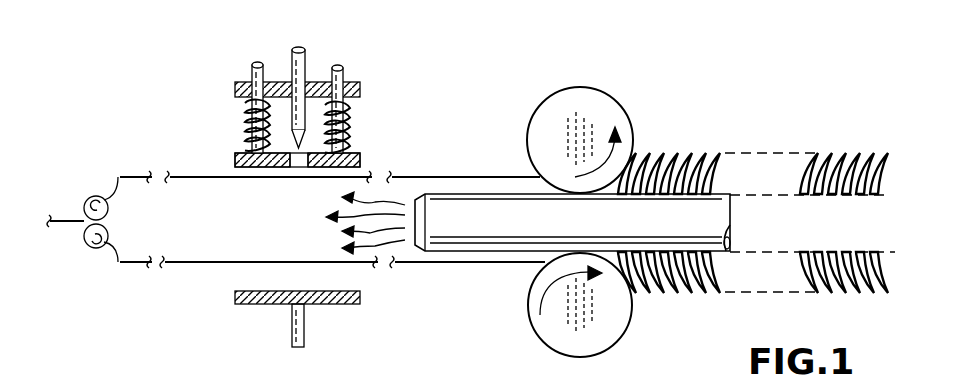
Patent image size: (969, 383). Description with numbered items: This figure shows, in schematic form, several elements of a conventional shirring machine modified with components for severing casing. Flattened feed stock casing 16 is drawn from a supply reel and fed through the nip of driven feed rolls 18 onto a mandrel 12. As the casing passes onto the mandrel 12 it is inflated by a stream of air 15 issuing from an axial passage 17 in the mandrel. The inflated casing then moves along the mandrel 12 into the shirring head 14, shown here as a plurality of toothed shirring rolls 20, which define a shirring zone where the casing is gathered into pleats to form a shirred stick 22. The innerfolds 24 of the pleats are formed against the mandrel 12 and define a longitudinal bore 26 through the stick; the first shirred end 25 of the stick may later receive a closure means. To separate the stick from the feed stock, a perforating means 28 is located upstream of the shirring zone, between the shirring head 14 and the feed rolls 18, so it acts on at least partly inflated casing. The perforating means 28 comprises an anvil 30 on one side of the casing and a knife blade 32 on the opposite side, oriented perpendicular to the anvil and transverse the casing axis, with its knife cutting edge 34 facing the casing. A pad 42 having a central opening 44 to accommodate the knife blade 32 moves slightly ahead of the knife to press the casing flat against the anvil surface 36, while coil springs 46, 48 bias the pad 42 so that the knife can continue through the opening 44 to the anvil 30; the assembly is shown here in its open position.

The mandrel 12 is at (722, 255).
The shirring head 14 is at (598, 72).
The stream of air 15 is at (350, 223).
The feed stock casing 16 is at (103, 196).
The axial passage 17 is at (732, 240).
The feed rolls 18 is at (90, 249).
The toothed shirring rolls 20 is at (616, 104).
The shirred stick 22 is at (705, 160).
The innerfolds 24 is at (690, 202).
The first shirred end 25 is at (888, 188).
The longitudinal bore 26 is at (832, 200).
The perforating means 28 is at (232, 42).
The anvil 30 is at (294, 310).
The knife blade 32 is at (308, 110).
The knife cutting edge 34 is at (272, 145).
The anvil surface 36 is at (243, 291).
The pad 42 is at (362, 162).
The central opening 44 is at (297, 168).
The coil spring 46 is at (250, 118).
The coil spring 48 is at (348, 130).